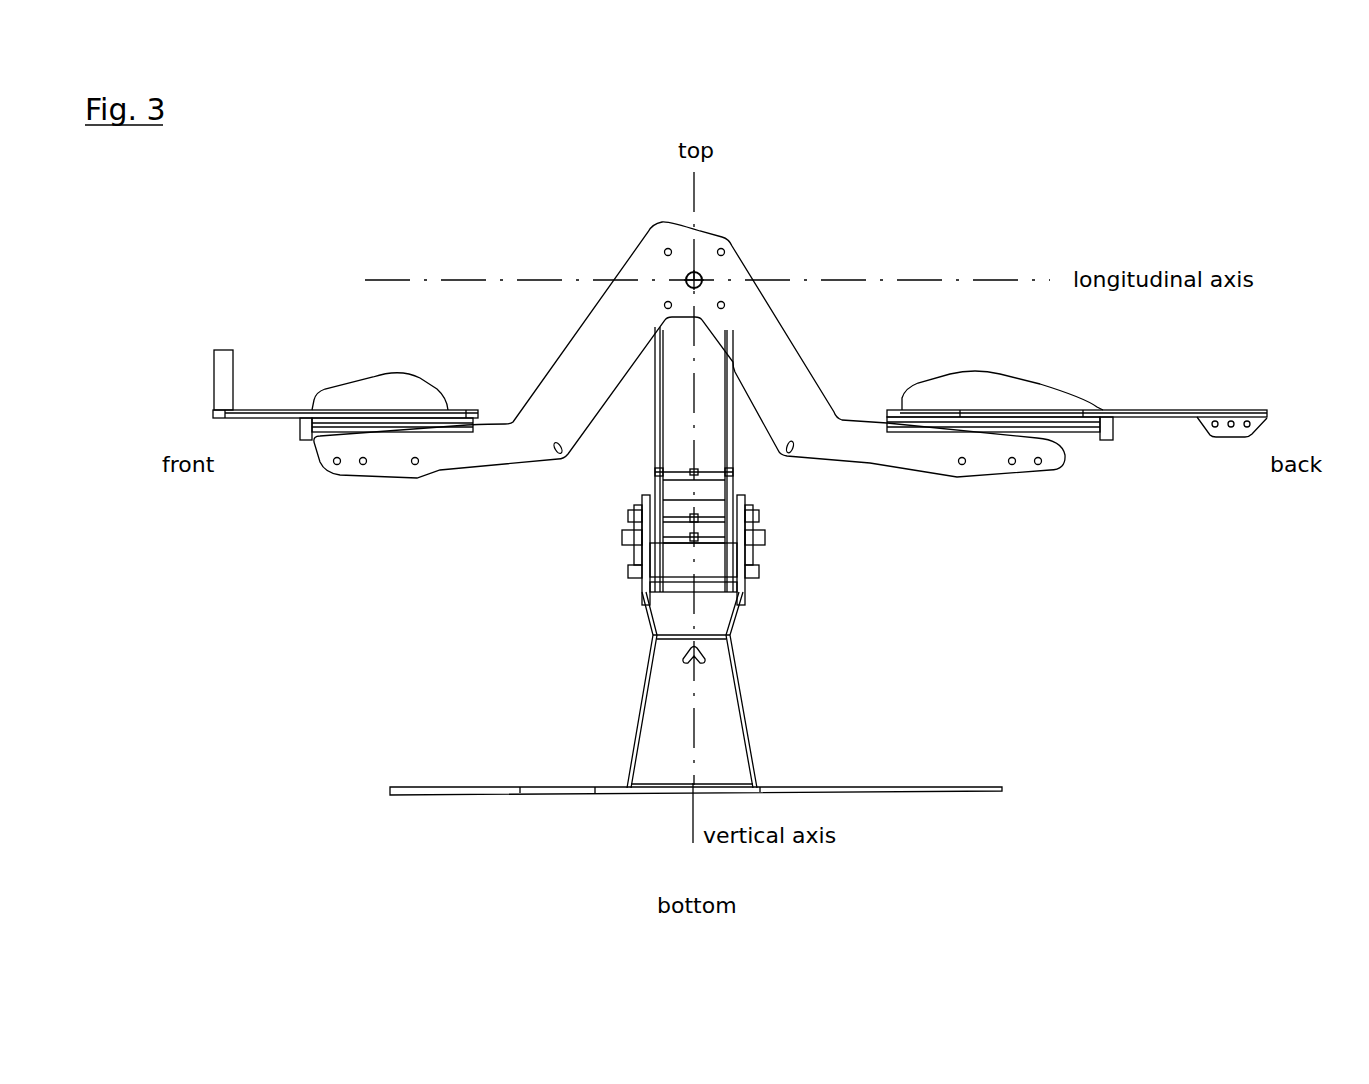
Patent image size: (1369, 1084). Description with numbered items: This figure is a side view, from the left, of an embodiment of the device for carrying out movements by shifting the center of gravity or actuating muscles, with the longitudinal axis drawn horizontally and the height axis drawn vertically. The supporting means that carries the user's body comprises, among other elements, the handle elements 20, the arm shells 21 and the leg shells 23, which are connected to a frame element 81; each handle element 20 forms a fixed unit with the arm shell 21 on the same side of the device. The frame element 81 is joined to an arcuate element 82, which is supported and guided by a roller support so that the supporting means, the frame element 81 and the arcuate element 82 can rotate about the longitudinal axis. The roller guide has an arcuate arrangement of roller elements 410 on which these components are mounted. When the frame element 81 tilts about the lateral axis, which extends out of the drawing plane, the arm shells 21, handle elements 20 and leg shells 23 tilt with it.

The handle element 20 is at (223, 372).
The arm shell 21 is at (410, 390).
The leg shell 23 is at (1025, 398).
The frame element 81 is at (778, 363).
The arcuate element 82 is at (657, 407).
The roller elements 410 is at (715, 563).